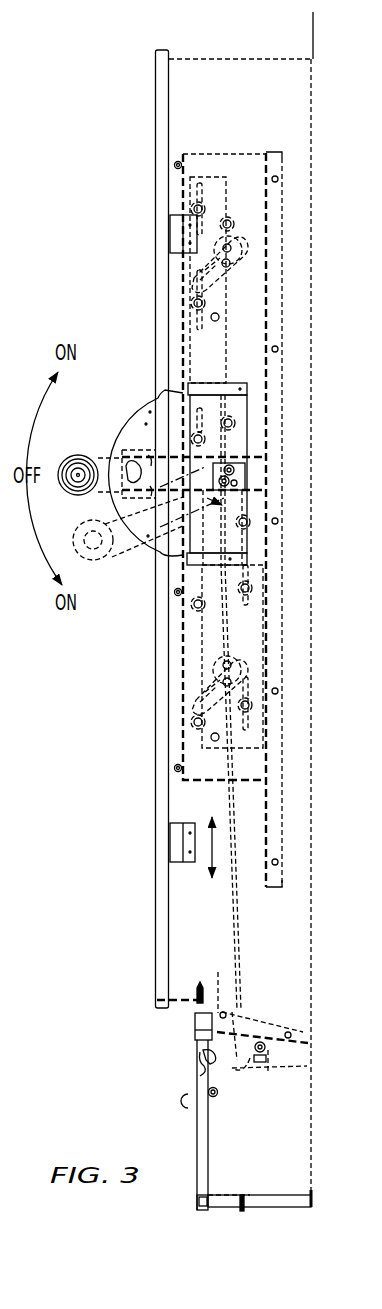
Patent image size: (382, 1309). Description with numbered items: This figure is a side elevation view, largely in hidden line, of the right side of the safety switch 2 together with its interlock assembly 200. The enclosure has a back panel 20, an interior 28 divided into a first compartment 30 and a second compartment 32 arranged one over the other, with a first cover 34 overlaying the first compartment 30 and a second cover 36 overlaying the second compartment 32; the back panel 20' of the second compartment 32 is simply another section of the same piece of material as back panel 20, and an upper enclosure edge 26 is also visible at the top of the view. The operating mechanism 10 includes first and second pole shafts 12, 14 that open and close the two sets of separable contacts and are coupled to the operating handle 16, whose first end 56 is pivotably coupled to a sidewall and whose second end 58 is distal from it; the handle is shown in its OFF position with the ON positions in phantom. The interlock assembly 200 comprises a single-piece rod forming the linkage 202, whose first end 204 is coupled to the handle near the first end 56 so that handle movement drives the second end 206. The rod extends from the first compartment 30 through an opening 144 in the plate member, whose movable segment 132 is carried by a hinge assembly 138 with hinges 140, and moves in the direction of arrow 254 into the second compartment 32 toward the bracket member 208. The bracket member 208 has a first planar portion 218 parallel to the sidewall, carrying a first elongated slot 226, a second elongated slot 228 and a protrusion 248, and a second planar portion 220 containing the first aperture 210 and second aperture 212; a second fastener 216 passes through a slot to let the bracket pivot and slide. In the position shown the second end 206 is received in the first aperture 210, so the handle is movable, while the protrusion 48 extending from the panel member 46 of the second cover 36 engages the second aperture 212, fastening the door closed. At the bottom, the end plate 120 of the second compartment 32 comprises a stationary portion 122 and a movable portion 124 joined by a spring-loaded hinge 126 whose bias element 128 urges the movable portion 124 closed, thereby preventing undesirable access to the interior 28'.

The safety switch 2 is at (325, 1219).
The operating mechanism 10 is at (150, 395).
The first pole shaft 12 is at (232, 262).
The second pole shaft 14 is at (240, 672).
The operating handle 16 is at (82, 455).
The back panel 20 is at (324, 609).
The back panel 20' is at (333, 1097).
The top wall 26 is at (212, 58).
The interior 28 is at (192, 519).
The interior 28' is at (325, 1128).
The first compartment 30 is at (185, 908).
The second compartment 32 is at (218, 1170).
The first cover 34 is at (155, 640).
The second cover 36 is at (196, 1150).
The panel member 46 is at (196, 1135).
The protrusion 48 is at (197, 1026).
The first end 56 is at (259, 440).
The second end 58 is at (66, 500).
The end plate 120 is at (252, 1192).
The stationary portion 122 is at (282, 1193).
The movable portion 124 is at (200, 1202).
The spring-loaded hinge 126 is at (237, 1214).
The bias element 128 is at (242, 1212).
The movable segment 132 is at (175, 1000).
The hinge assembly 138 is at (195, 978).
The hinge 140 is at (199, 982).
The opening 144 is at (255, 1012).
The interlock assembly 200 is at (193, 1071).
The linkage 202 is at (228, 882).
The first end 204 is at (200, 546).
The second end 206 is at (254, 1082).
The bracket member 208 is at (287, 1052).
The first aperture 210 is at (256, 1030).
The second aperture 212 is at (218, 981).
The second fastener 216 is at (262, 1085).
The first planar portion 218 is at (275, 1068).
The second planar portion 220 is at (243, 1006).
The first elongated slot 226 is at (200, 1080).
The second elongated slot 228 is at (257, 1074).
The protrusion 248 is at (200, 1052).
The arrow 254 is at (212, 845).